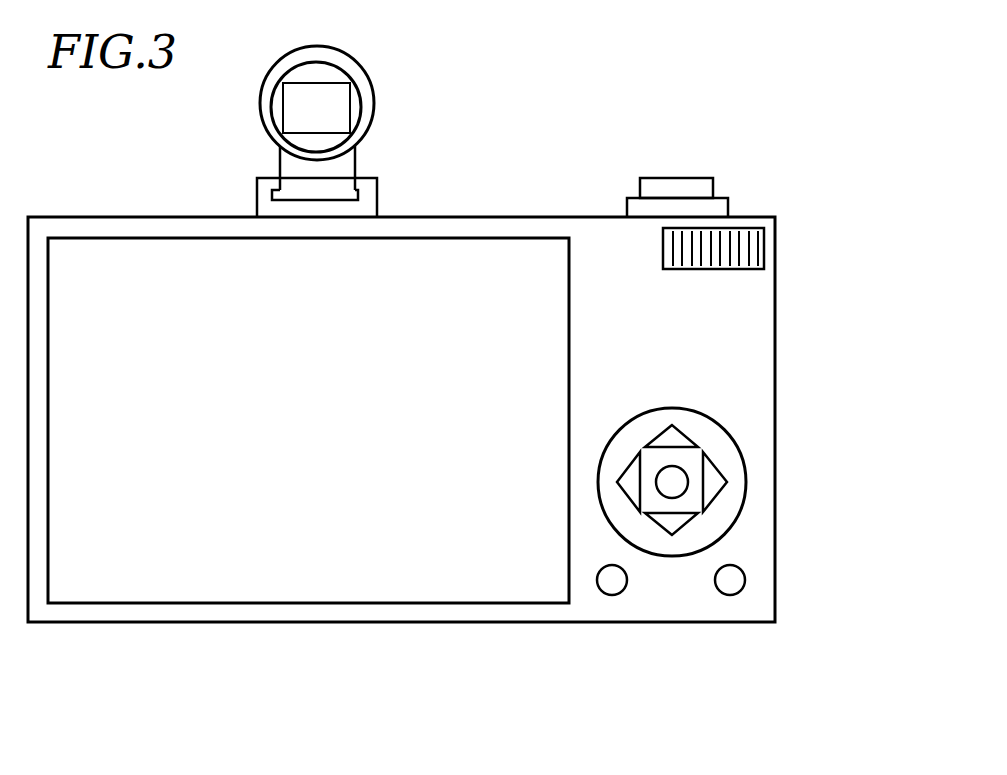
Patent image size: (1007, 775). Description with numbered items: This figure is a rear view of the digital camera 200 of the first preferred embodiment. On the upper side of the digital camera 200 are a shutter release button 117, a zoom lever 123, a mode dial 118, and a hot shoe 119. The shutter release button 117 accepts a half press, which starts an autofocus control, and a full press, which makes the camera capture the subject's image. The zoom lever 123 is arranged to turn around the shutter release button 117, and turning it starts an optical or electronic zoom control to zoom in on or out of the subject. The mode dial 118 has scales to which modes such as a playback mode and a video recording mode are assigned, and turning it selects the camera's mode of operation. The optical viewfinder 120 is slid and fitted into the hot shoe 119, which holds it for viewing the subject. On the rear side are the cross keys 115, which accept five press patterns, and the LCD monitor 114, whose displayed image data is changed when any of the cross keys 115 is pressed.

The digital camera 200 is at (760, 666).
The LCD monitor 114 is at (278, 603).
The cross keys 115 is at (745, 465).
The shutter release button 117 is at (678, 178).
The mode dial 118 is at (765, 252).
The hot shoe 119 is at (257, 183).
The optical viewfinder 120 is at (368, 72).
The zoom lever 123 is at (728, 208).